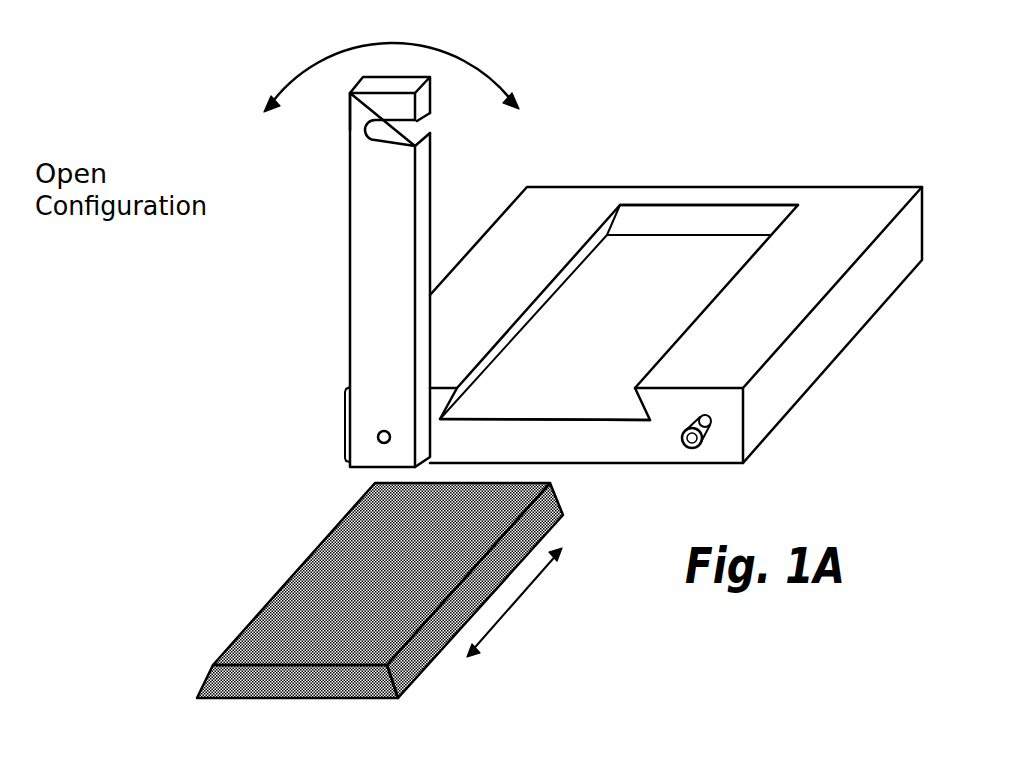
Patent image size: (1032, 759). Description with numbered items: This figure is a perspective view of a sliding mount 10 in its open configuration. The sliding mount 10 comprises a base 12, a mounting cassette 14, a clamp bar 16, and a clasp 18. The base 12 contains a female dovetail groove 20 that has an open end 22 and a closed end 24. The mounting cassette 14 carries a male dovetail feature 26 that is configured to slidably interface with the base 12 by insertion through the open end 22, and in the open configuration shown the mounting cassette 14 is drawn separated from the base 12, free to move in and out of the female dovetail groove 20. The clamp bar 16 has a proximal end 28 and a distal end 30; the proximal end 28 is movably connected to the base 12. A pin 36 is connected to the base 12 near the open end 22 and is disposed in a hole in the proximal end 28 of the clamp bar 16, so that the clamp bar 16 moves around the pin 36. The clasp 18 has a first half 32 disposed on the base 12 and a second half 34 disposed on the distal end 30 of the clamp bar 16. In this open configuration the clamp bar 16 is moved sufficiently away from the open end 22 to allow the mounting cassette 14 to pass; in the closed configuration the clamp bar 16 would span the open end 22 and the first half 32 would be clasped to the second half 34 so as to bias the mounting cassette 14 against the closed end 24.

The sliding mount 10 is at (795, 75).
The base 12 is at (883, 187).
The mounting cassette 14 is at (272, 597).
The clamp bar 16 is at (350, 310).
The clasp 18 is at (633, 302).
The female dovetail groove 20 is at (728, 287).
The open end 22 is at (577, 410).
The closed end 24 is at (707, 205).
The male dovetail feature 26 is at (206, 680).
The proximal end 28 is at (345, 437).
The distal end 30 is at (350, 105).
The first half 32 is at (713, 430).
The second half 34 is at (428, 118).
The pin 36 is at (384, 430).